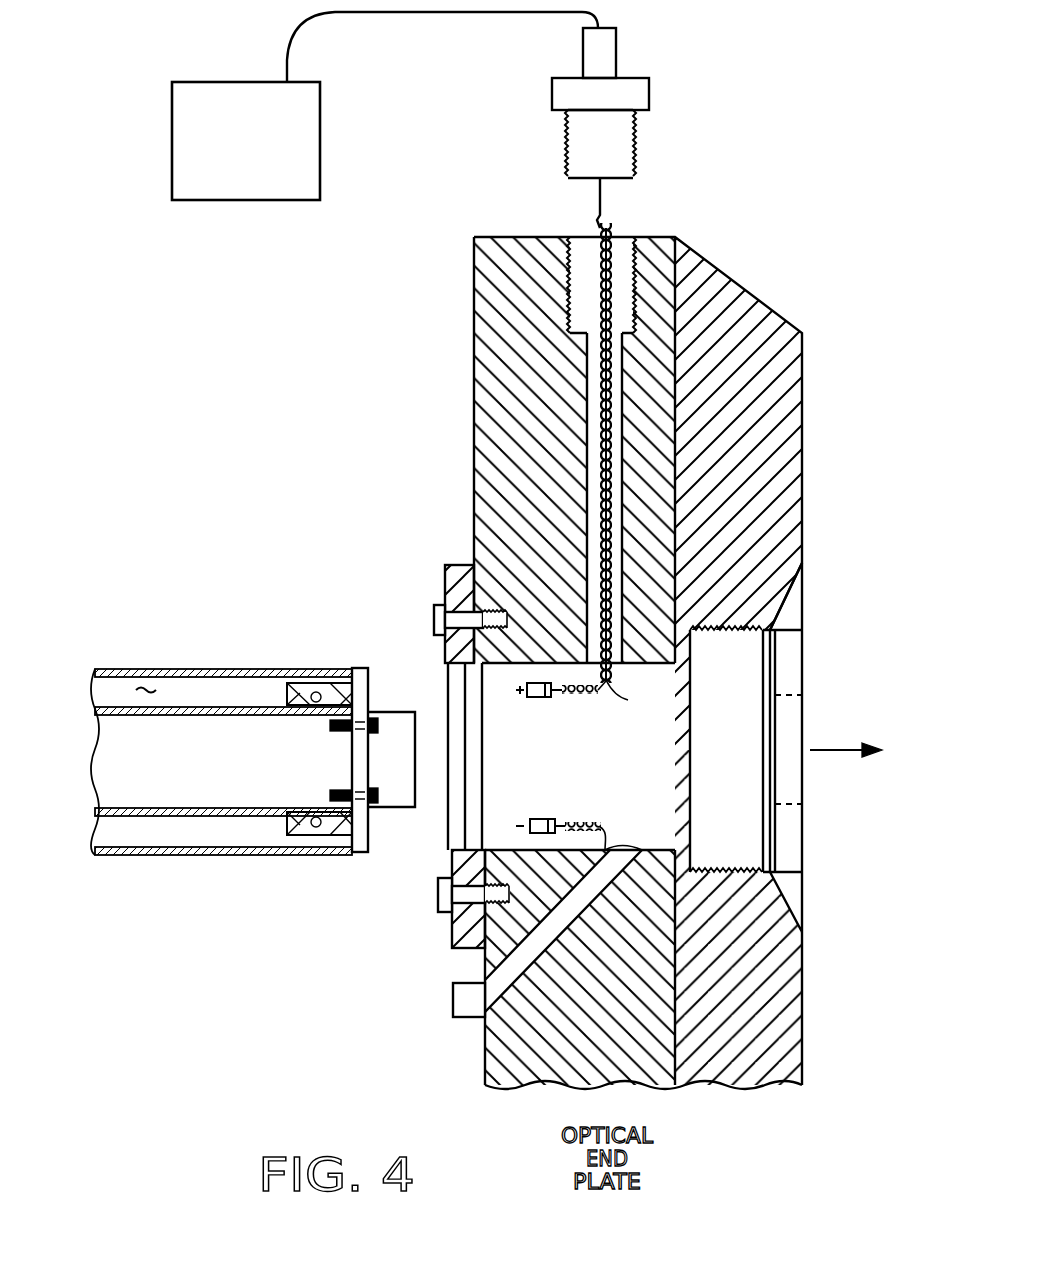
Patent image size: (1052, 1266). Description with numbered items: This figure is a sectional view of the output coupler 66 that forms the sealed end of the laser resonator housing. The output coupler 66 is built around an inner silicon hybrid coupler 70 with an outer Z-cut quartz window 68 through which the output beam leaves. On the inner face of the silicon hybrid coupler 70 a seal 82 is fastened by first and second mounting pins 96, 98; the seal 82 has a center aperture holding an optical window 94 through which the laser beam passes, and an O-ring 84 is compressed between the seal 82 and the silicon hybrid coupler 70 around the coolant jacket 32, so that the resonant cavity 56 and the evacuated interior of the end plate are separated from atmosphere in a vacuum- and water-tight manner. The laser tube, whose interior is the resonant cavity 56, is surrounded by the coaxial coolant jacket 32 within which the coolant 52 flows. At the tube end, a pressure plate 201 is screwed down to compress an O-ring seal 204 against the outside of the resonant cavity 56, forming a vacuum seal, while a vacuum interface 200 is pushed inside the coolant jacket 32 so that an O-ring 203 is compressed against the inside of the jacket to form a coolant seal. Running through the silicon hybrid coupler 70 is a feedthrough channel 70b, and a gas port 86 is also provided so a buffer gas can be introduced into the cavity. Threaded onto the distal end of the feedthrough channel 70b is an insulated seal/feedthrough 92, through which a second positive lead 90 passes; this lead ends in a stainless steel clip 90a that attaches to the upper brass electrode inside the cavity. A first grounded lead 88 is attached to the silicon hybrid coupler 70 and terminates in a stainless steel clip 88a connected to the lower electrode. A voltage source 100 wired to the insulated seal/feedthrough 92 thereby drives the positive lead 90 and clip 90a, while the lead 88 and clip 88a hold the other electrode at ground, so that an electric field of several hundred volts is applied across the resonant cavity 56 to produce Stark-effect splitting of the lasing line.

The voltage source 100 is at (222, 185).
The insulated seal/feedthrough 92 is at (614, 157).
The silicon hybrid coupler 70 is at (675, 656).
The feedthrough channel 70b is at (622, 435).
The second positive lead 90 is at (610, 682).
The second stainless steel clip 90a is at (538, 699).
The first grounded lead 88 is at (600, 824).
The stainless steel clip 88a is at (537, 817).
The seal 82 is at (455, 565).
The first mounting pin 96 is at (437, 615).
The O-ring 84 is at (462, 666).
The optical window 94 is at (465, 800).
The second mounting pin 98 is at (440, 910).
The gas port 86 is at (453, 998).
The Z-cut quartz window 68 is at (805, 822).
The output coupler 66 is at (832, 910).
The resonant cavity 56 is at (255, 762).
The coolant jacket 32 is at (233, 669).
The coolant 52 is at (149, 626).
The O-ring 203 is at (312, 683).
The O-ring seal 204 is at (347, 683).
The pressure plate 201 is at (378, 852).
The vacuum interface 200 is at (295, 853).